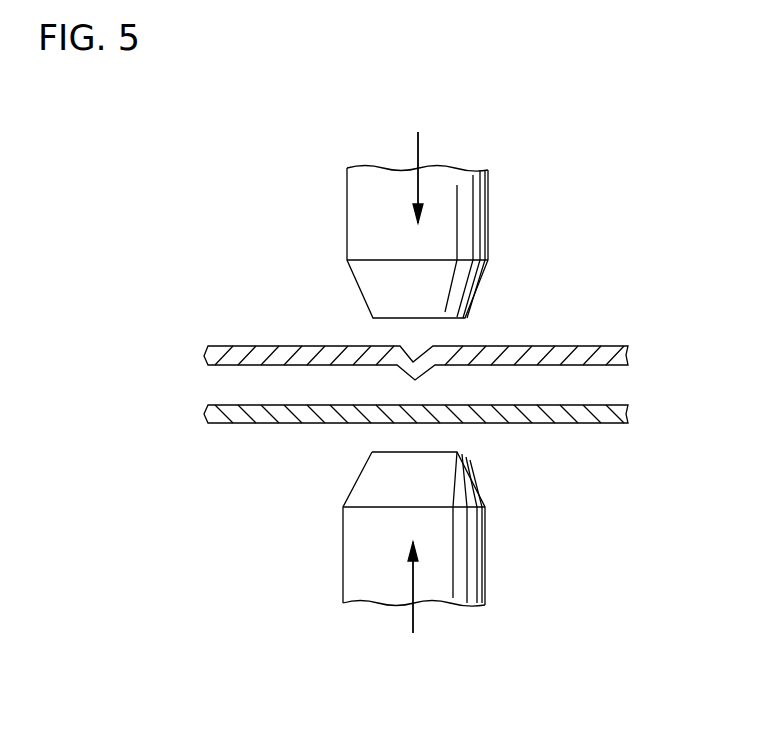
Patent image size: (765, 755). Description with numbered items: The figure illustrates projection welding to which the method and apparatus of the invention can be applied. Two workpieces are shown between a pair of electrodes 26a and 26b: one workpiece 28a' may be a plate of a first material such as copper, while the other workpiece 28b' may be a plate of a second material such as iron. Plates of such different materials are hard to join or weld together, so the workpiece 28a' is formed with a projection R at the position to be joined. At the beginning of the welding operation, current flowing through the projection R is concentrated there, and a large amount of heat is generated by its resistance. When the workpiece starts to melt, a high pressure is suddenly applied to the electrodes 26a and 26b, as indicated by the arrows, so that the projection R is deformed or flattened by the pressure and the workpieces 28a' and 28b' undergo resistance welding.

The electrode 26a is at (489, 217).
The electrode 26b is at (486, 540).
The workpiece 28a' is at (449, 317).
The workpiece 28b' is at (446, 459).
The projection R is at (413, 380).